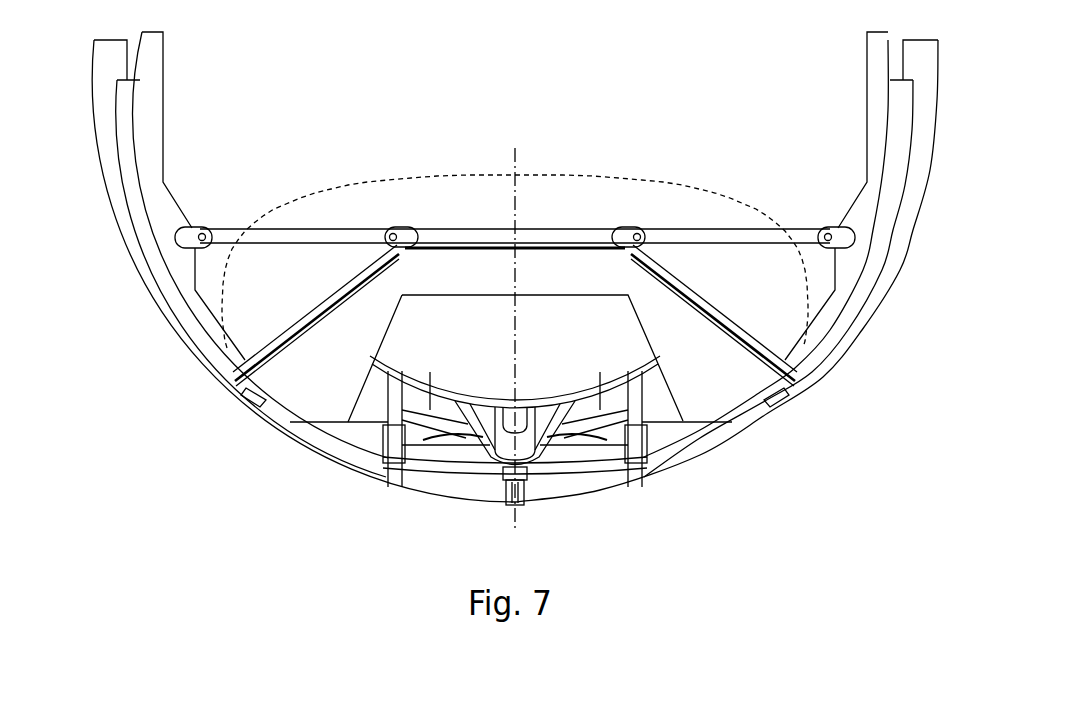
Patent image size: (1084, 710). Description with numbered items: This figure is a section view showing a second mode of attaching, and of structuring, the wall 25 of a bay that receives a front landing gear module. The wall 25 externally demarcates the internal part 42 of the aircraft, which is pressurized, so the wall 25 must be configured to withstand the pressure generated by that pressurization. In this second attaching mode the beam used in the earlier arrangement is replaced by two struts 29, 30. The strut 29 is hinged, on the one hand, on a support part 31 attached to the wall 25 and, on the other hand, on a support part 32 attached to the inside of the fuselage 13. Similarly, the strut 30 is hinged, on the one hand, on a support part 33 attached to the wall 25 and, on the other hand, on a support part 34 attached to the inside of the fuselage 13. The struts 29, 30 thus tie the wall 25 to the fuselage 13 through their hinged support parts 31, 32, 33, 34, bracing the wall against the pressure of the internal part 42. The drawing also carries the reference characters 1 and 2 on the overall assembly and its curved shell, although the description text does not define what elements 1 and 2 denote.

The pressure vessel assembly 1 is at (355, 491).
The inner shell / frame 2 is at (310, 457).
The fuselage 13 is at (113, 200).
The wall 25 is at (442, 247).
The strut 29 is at (290, 229).
The strut 30 is at (715, 229).
The support part 31 is at (392, 228).
The support part 32 is at (191, 226).
The support part 33 is at (636, 228).
The support part 34 is at (837, 227).
The internal part 42 is at (248, 305).